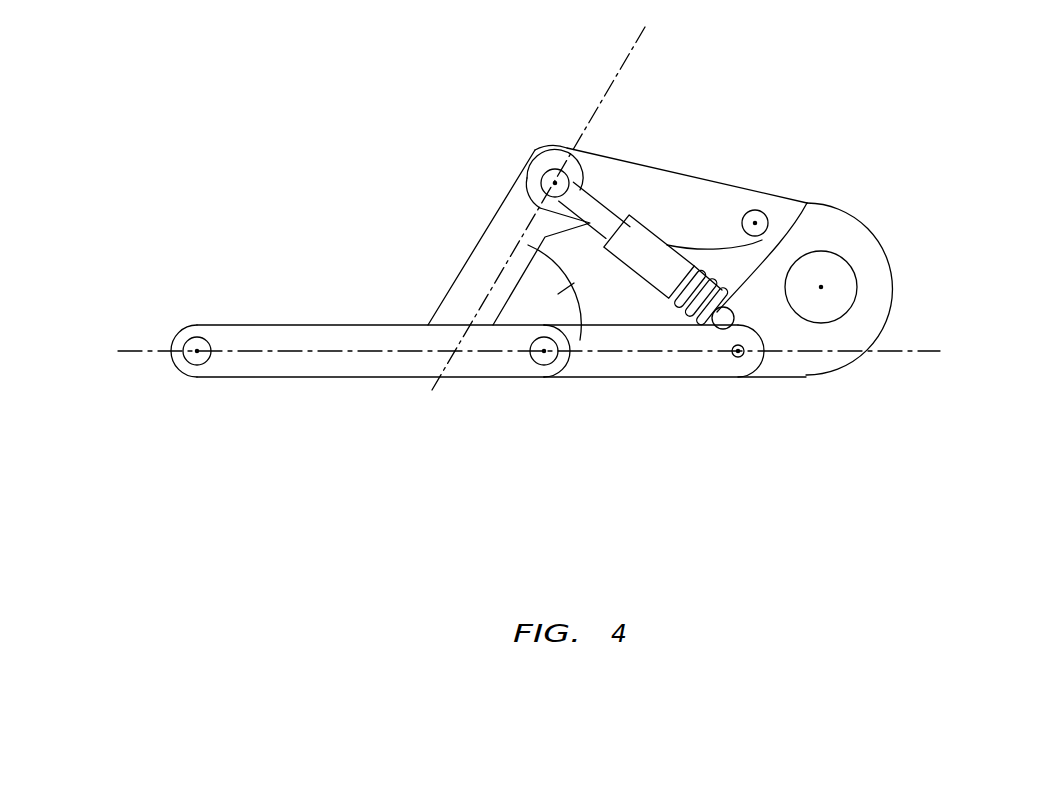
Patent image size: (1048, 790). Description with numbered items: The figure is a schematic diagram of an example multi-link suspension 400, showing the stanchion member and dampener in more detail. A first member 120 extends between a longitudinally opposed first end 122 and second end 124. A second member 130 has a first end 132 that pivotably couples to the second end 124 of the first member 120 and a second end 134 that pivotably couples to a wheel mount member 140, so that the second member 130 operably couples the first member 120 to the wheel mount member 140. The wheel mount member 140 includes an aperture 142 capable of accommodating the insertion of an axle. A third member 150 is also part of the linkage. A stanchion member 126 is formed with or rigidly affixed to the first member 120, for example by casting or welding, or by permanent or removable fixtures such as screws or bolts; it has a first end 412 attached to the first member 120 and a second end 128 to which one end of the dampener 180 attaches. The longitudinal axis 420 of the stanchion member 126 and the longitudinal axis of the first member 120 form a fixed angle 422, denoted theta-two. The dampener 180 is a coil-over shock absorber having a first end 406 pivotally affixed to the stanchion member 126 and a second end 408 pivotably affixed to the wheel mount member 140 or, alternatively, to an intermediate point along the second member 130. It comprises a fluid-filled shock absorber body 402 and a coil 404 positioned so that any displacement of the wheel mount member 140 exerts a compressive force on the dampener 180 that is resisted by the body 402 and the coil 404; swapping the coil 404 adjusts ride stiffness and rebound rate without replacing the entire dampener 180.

The multi-link suspension 400 is at (880, 74).
The first member 120 is at (357, 363).
The first end 122 is at (191, 378).
The second end 124 is at (550, 378).
The stanchion member 126 is at (476, 270).
The second end of stanchion member 128 is at (548, 140).
The second member 130 is at (660, 362).
The first end 132 is at (557, 378).
The second end 134 is at (744, 378).
The wheel mount member 140 is at (865, 274).
The aperture 142 is at (843, 256).
The third member 150 is at (663, 198).
The dampener 180 is at (636, 214).
The shock absorber body 402 is at (688, 252).
The coil 404 is at (745, 282).
The first end of dampener 406 is at (541, 183).
The second end of dampener 408 is at (736, 312).
The first end of stanchion member 412 is at (428, 323).
The longitudinal axis of stanchion member 420 is at (638, 42).
The angle 422 is at (578, 313).